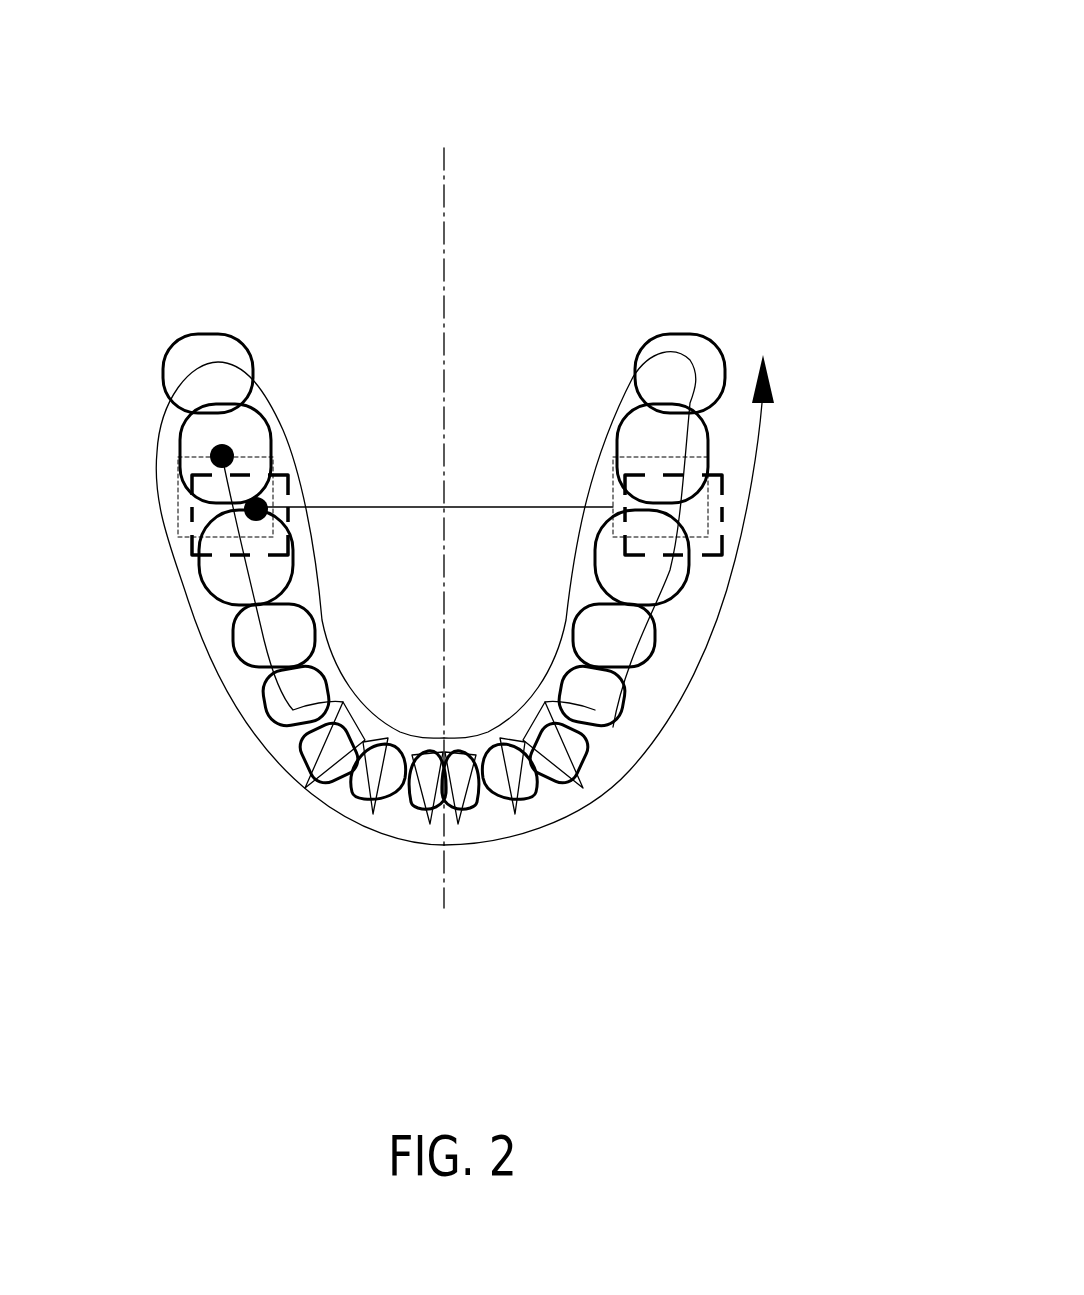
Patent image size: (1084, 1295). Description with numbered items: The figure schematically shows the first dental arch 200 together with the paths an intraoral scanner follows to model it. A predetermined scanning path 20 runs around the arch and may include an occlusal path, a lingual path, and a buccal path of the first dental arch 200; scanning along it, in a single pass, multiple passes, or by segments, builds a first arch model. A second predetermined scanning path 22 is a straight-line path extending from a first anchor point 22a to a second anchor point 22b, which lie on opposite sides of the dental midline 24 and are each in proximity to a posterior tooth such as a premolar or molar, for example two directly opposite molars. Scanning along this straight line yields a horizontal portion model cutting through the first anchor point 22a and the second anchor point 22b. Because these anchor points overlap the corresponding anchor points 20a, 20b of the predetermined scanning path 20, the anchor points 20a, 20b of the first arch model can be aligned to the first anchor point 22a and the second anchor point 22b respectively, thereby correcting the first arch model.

The first dental arch 200 is at (718, 55).
The predetermined scanning path 20 is at (725, 600).
The anchor point 20a is at (182, 481).
The anchor point 20b is at (662, 455).
The predetermined scanning path 22 is at (360, 507).
The first anchor point 22a is at (208, 562).
The second anchor point 22b is at (722, 523).
The dental midline 24 is at (445, 295).